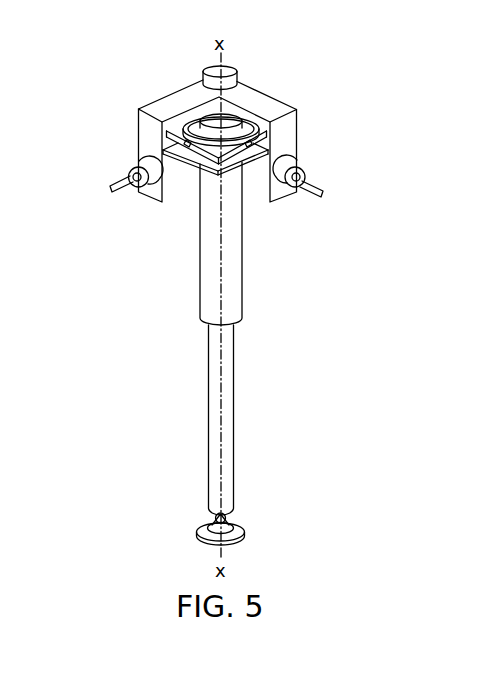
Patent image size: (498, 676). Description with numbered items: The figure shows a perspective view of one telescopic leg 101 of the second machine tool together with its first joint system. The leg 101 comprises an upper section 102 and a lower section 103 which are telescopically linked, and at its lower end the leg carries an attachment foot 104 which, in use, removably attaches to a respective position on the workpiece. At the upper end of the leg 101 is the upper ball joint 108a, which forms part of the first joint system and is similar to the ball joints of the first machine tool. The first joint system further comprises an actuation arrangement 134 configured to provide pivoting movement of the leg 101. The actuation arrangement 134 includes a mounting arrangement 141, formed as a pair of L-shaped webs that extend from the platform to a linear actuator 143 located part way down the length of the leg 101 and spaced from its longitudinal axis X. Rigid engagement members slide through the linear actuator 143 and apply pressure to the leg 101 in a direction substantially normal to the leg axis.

The leg 101 is at (265, 262).
The upper section 102 is at (199, 230).
The lower section 103 is at (208, 423).
The attachment foot 104 is at (246, 530).
The upper ball joint 108a is at (173, 117).
The actuation arrangement 134 is at (295, 72).
The mounting arrangement 141 is at (237, 82).
The linear actuator 143 is at (130, 162).